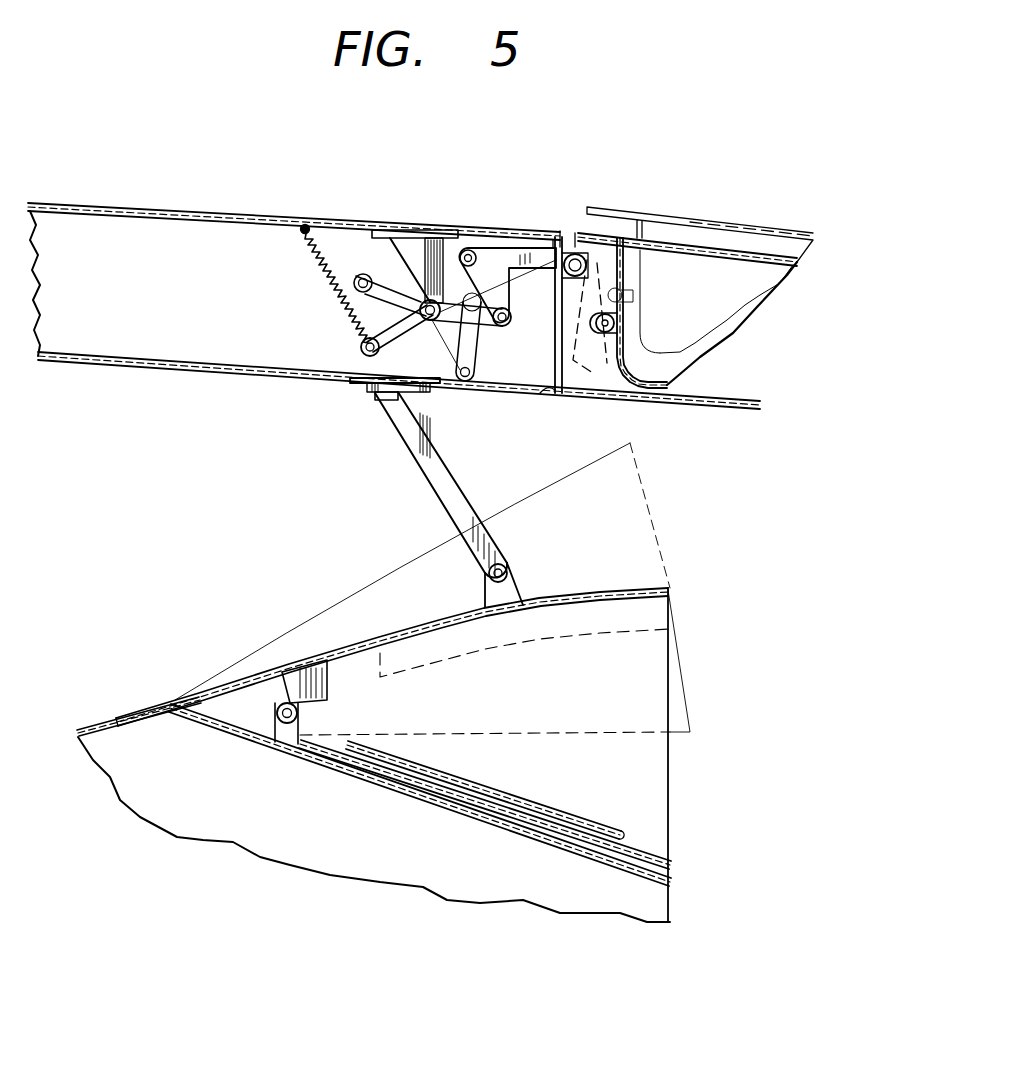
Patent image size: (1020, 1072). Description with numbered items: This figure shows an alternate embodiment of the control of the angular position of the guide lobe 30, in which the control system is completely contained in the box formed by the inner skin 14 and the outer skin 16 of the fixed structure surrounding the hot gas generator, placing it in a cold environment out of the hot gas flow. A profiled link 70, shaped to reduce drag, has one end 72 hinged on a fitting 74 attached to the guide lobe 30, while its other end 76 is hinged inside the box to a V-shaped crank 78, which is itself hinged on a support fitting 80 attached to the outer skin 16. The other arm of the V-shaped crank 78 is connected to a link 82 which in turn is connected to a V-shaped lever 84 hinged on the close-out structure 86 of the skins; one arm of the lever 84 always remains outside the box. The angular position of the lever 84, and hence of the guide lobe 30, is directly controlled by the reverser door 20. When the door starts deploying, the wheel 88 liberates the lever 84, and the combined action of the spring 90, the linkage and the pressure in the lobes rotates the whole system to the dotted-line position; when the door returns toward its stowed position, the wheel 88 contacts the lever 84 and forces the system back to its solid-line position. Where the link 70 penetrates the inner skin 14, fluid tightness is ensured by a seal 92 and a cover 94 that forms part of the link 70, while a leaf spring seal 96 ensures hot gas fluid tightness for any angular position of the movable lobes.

The inner skin 14 is at (175, 378).
The outer skin 16 is at (226, 210).
The reverser door 20 is at (680, 247).
The guide lobe 30 is at (655, 590).
The profiled link 70 is at (440, 502).
The end of link 72 is at (505, 560).
The fitting 74 is at (518, 582).
The other end of link 76 is at (358, 349).
The V-shaped crank 78 is at (364, 334).
The support fitting 80 is at (412, 258).
The link 82 is at (515, 322).
The V-shaped lever 84 is at (525, 240).
The close-out structure 86 is at (550, 393).
The wheel 88 is at (620, 323).
The spring 90 is at (322, 266).
The seal 92 is at (348, 388).
The cover 94 is at (366, 396).
The leaf spring seal 96 is at (130, 720).